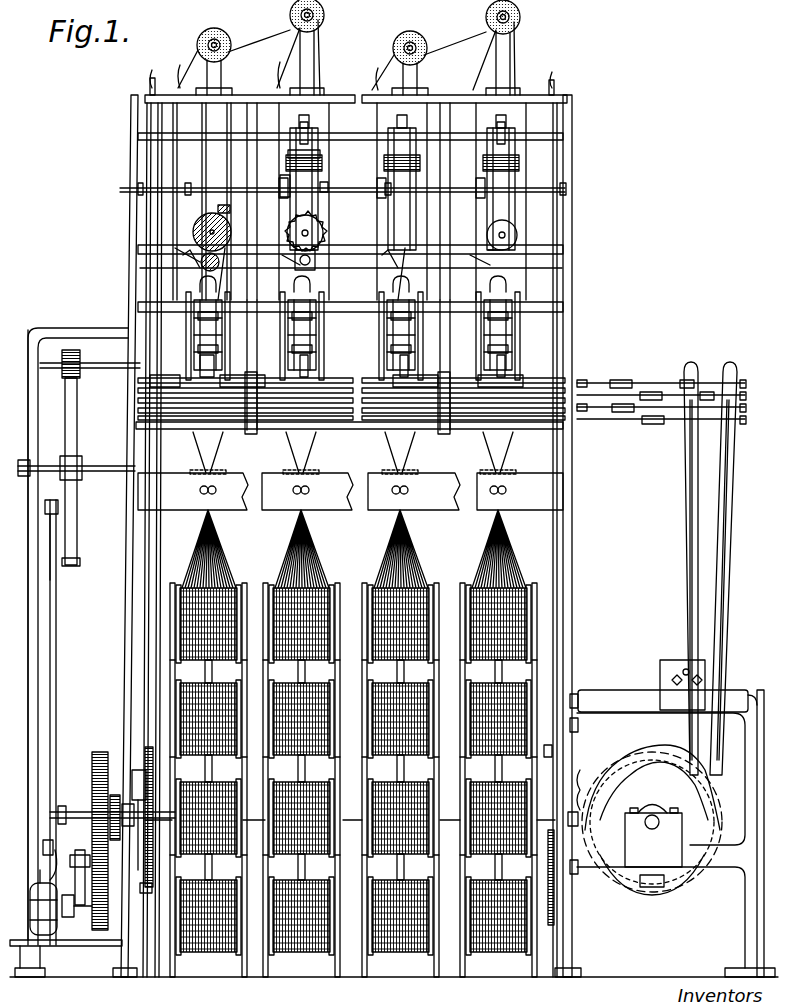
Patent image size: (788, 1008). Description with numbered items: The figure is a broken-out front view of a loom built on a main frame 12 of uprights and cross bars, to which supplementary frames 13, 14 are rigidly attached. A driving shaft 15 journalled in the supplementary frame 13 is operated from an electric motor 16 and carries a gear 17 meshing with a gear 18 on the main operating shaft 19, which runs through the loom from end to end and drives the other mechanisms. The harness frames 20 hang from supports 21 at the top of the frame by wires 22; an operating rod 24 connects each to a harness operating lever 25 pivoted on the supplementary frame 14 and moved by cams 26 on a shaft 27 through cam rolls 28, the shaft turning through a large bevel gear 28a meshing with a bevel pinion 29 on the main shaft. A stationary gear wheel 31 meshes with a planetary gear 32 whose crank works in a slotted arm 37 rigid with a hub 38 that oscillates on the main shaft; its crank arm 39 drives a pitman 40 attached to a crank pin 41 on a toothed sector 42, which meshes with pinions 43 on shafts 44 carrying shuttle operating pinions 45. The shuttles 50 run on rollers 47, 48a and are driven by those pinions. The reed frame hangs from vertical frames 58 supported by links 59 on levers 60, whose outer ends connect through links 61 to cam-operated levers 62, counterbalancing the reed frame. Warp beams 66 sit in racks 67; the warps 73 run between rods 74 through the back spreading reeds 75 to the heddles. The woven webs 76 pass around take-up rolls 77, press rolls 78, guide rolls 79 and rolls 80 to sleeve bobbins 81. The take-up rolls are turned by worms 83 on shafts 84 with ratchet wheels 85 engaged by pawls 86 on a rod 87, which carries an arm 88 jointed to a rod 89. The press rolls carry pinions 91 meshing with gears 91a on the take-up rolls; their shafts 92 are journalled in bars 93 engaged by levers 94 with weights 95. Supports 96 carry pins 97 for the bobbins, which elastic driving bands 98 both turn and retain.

The main frame 12 is at (130, 218).
The supplementary frame 13 is at (30, 722).
The supplementary frame 14 is at (625, 690).
The driving shaft 15 is at (75, 917).
The electric motor 16 is at (48, 935).
The gear 17 is at (100, 932).
The gear 18 is at (92, 758).
The main operating shaft 19 is at (160, 830).
The harness frames 20 is at (376, 420).
The supports 21 is at (458, 85).
The wires 22 is at (260, 290).
The operating rod 24 is at (602, 405).
The harness operating lever 25 is at (688, 552).
The cams 26 is at (655, 885).
The shaft 27 is at (653, 836).
The cam rolls 28 is at (720, 838).
The bevel gear 28a is at (618, 760).
The bevel pinion 29 is at (582, 790).
The stationary gear wheel 31 is at (113, 795).
The planetary gear 32 is at (135, 880).
The arm 37 is at (80, 870).
The hub 38 is at (75, 812).
The crank arm 39 is at (45, 860).
The pitman 40 is at (53, 683).
The crank pin 41 is at (60, 510).
The toothed sector 42 is at (78, 498).
The pinions 43 is at (68, 338).
The shafts 44 is at (92, 368).
The shuttle operating pinions 45 is at (200, 355).
The rollers 47 is at (200, 320).
The rollers 48a is at (312, 340).
The shuttles 50 is at (310, 285).
The vertical frames 58 is at (145, 273).
The links 59 is at (138, 160).
The levers 60 is at (352, 71).
The links 61 is at (145, 92).
The levers 62 is at (147, 893).
The warp beams 66 is at (208, 758).
The racks 67 is at (170, 950).
The warps 73 is at (215, 555).
The rods 74 is at (200, 490).
The back spreading reeds 75 is at (218, 472).
The woven webs 76 is at (328, 274).
The take-up rolls 77 is at (200, 223).
The press rolls 78 is at (205, 268).
The guide rolls 79 is at (183, 258).
The rolls 80 is at (276, 69).
The sleeve bobbins 81 is at (218, 40).
The worms 83 is at (228, 200).
The shafts 84 is at (230, 210).
The ratchet wheels 85 is at (206, 195).
The pawls 86 is at (292, 180).
The rod 87 is at (330, 186).
The arm 88 is at (175, 190).
The rod 89 is at (160, 228).
The pinions 91 is at (315, 262).
The gears 91a is at (320, 233).
The shafts 92 is at (390, 262).
The bars 93 is at (315, 200).
The levers 94 is at (308, 128).
The weights 95 is at (320, 154).
The supports 96 is at (222, 70).
The pins 97 is at (324, 15).
The elastic driving bands 98 is at (225, 80).